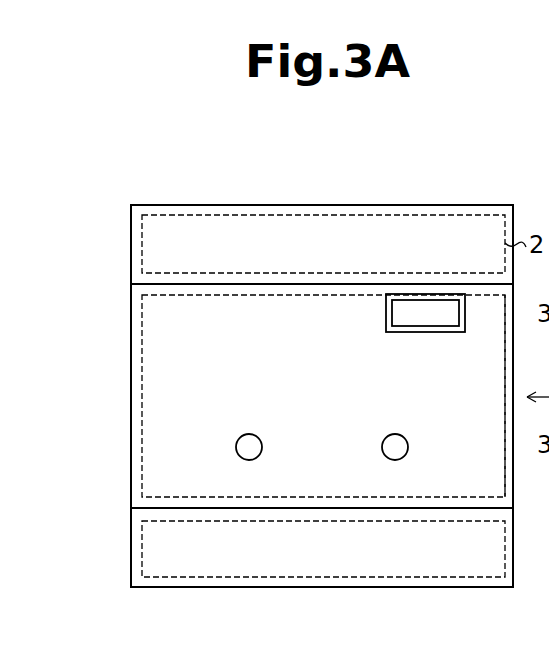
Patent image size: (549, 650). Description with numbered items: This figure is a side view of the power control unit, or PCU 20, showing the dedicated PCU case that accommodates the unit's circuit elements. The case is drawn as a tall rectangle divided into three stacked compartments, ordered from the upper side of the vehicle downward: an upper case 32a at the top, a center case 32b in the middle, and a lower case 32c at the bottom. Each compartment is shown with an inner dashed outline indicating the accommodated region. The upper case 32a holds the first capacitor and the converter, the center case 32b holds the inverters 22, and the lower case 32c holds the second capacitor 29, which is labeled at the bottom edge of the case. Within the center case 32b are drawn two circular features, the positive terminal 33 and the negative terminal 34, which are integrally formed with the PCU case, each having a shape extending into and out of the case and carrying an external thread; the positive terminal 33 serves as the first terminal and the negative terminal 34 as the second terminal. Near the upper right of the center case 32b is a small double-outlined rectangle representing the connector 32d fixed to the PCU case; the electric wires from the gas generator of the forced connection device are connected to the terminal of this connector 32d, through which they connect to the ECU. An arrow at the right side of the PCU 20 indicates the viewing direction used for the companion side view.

The PCU 20 is at (459, 168).
The inverters 22 is at (505, 360).
The second capacitor 29 is at (319, 590).
The upper case 32a is at (131, 248).
The center case 32b is at (131, 336).
The lower case 32c is at (131, 548).
The connector 32d is at (386, 311).
The positive terminal 33 is at (249, 434).
The negative terminal 34 is at (395, 434).